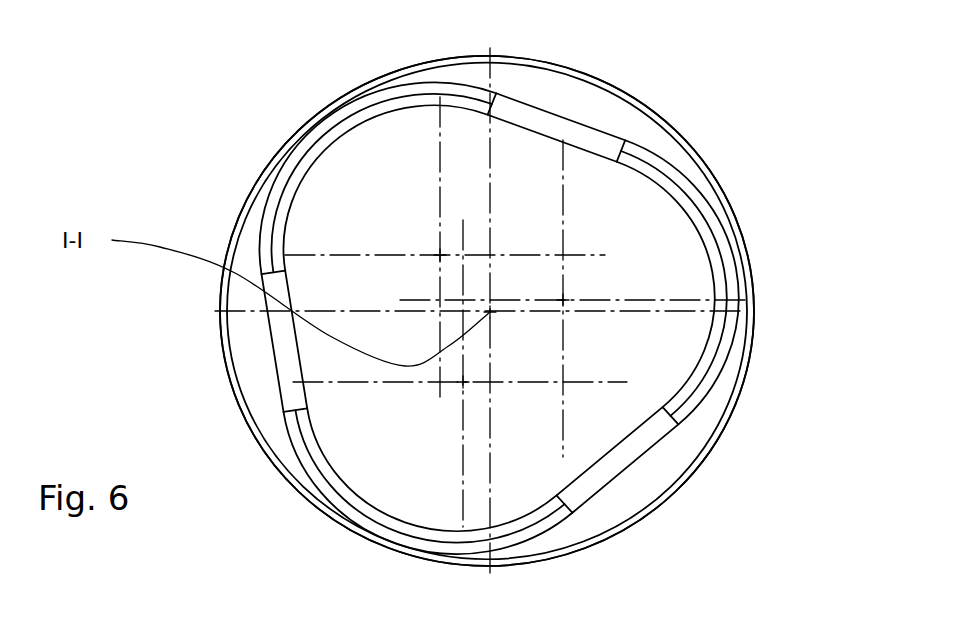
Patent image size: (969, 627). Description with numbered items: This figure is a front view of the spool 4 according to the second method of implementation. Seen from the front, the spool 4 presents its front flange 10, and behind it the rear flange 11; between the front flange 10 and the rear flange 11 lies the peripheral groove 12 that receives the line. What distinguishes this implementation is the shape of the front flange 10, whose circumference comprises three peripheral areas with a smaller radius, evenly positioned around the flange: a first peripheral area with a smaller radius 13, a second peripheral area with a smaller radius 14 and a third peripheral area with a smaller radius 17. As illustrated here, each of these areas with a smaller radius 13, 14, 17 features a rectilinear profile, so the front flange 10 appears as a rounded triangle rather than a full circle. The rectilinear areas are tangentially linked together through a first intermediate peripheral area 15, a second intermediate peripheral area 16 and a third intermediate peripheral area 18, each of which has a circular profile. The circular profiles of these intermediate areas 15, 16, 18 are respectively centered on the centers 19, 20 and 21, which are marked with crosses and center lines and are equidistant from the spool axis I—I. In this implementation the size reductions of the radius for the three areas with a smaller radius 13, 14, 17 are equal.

The spool 4 is at (167, 183).
The front flange 10 is at (643, 230).
The rear flange 11 is at (657, 117).
The peripheral groove 12 is at (253, 337).
The first peripheral area with a smaller radius 13 is at (596, 113).
The second peripheral area with a smaller radius 14 is at (622, 484).
The first intermediate peripheral area 15 is at (762, 244).
The second intermediate peripheral area 16 is at (392, 555).
The third peripheral area with a smaller radius 17 is at (264, 376).
The third intermediate peripheral area 18 is at (294, 131).
The center 19 is at (563, 300).
The center 20 is at (463, 382).
The center 21 is at (440, 255).